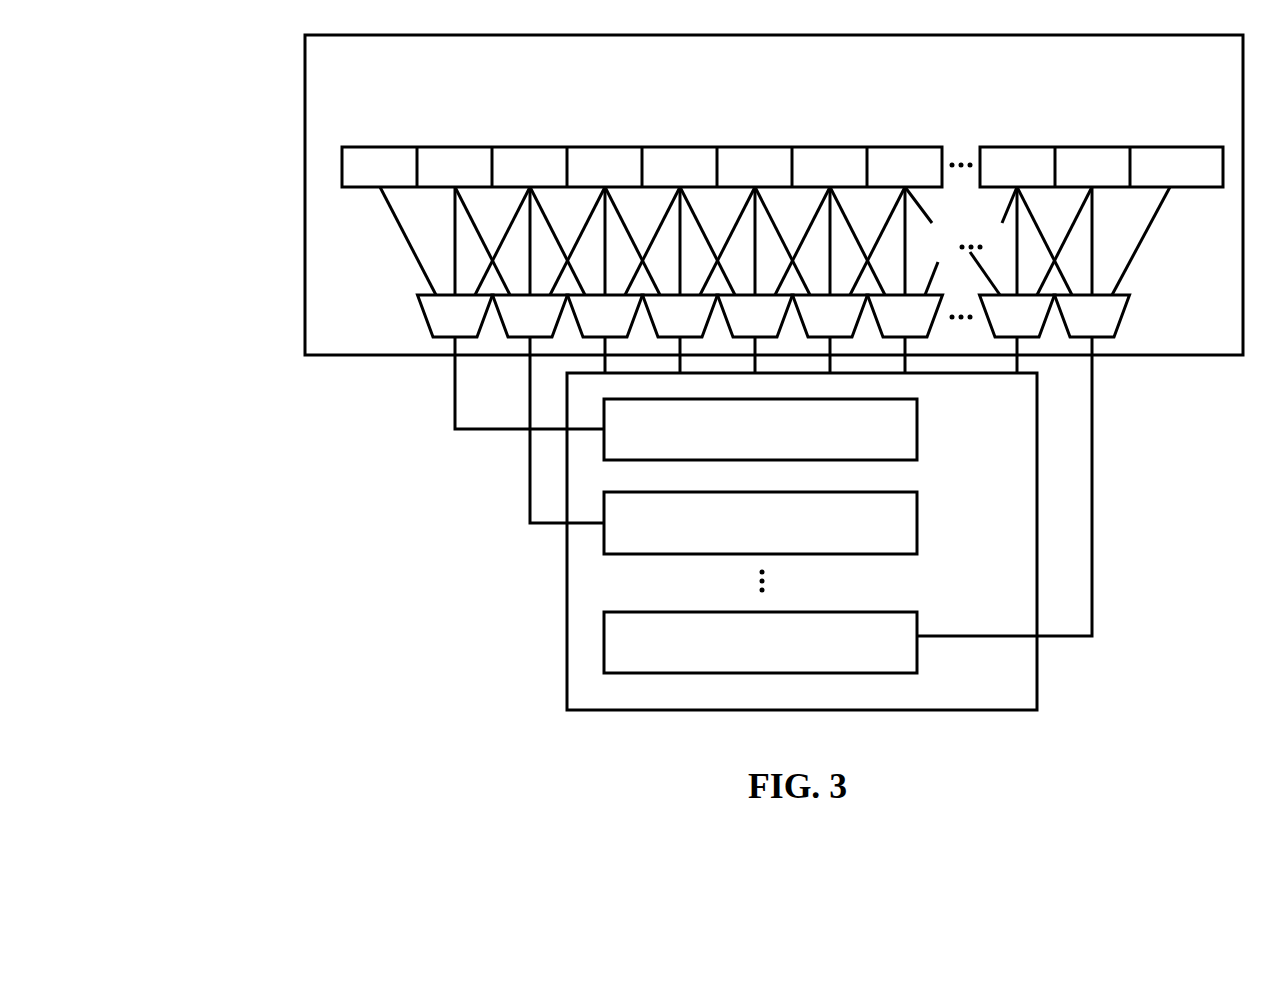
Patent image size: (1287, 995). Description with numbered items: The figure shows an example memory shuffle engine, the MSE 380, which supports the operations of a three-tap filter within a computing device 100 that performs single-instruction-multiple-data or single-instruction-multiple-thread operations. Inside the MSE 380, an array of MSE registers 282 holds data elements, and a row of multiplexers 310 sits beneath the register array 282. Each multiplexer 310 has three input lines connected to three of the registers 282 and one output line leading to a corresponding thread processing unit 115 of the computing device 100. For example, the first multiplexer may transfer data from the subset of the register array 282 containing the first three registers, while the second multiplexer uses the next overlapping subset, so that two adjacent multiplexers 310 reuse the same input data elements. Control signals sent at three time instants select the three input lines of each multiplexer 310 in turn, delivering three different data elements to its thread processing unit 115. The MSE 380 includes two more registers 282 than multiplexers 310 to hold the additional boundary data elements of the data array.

The MSE 380 is at (682, 195).
The MSE registers 282 is at (363, 168).
The multiplexers 310 is at (430, 312).
The thread processing unit 115 is at (760, 536).
The computing device 100 is at (657, 523).